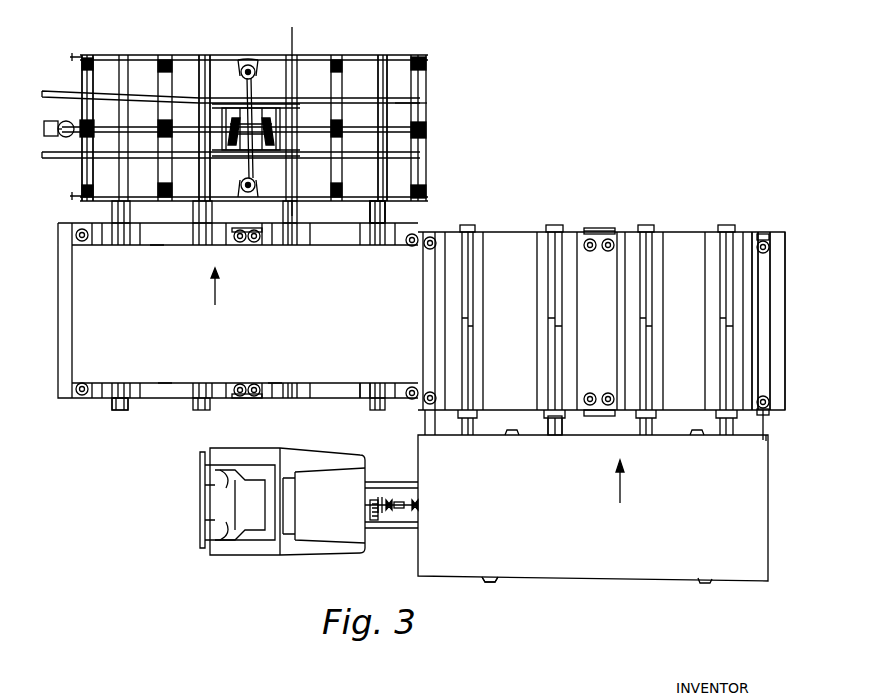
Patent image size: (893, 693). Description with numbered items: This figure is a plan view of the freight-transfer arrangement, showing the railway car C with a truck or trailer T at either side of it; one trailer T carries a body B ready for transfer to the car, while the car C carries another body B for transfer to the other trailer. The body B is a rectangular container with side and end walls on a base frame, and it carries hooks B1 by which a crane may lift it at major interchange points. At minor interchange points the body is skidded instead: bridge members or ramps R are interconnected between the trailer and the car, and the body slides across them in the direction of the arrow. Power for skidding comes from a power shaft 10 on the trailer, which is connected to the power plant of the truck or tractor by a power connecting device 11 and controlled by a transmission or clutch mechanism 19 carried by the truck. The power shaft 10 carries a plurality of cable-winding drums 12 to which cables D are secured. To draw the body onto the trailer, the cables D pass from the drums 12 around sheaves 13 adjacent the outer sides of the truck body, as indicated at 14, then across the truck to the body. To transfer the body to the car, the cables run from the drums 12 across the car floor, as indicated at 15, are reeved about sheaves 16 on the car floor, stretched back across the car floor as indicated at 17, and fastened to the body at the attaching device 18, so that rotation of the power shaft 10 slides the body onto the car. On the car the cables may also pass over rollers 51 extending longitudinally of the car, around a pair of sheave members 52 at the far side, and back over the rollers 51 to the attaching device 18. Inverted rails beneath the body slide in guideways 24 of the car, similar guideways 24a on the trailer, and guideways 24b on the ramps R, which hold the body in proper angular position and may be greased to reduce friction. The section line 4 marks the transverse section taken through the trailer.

The truck or trailer T is at (141, 56).
The power shaft 10 is at (400, 128).
The power connecting device 11 is at (402, 490).
The cable-winding drums 12 is at (86, 125).
The sheaves 13 is at (427, 66).
The cable run along truck body 14 is at (427, 106).
The cable run across car floor 15 is at (760, 313).
The sheaves 16 is at (768, 240).
The cable run stretched across car 17 is at (770, 285).
The attaching device 18 is at (768, 441).
The transmission or clutch mechanism 19 is at (376, 532).
The guideways 24 is at (362, 400).
The guideways 24a is at (205, 57).
The guideways 24b is at (395, 216).
The rollers 51 is at (591, 228).
The sheave members 52 is at (612, 236).
The section line 4— 4 is at (286, 33).
The body B is at (507, 446).
The hooks B1 is at (152, 400).
The railway car C is at (60, 400).
The cables D is at (82, 208).
The ramps R is at (366, 216).